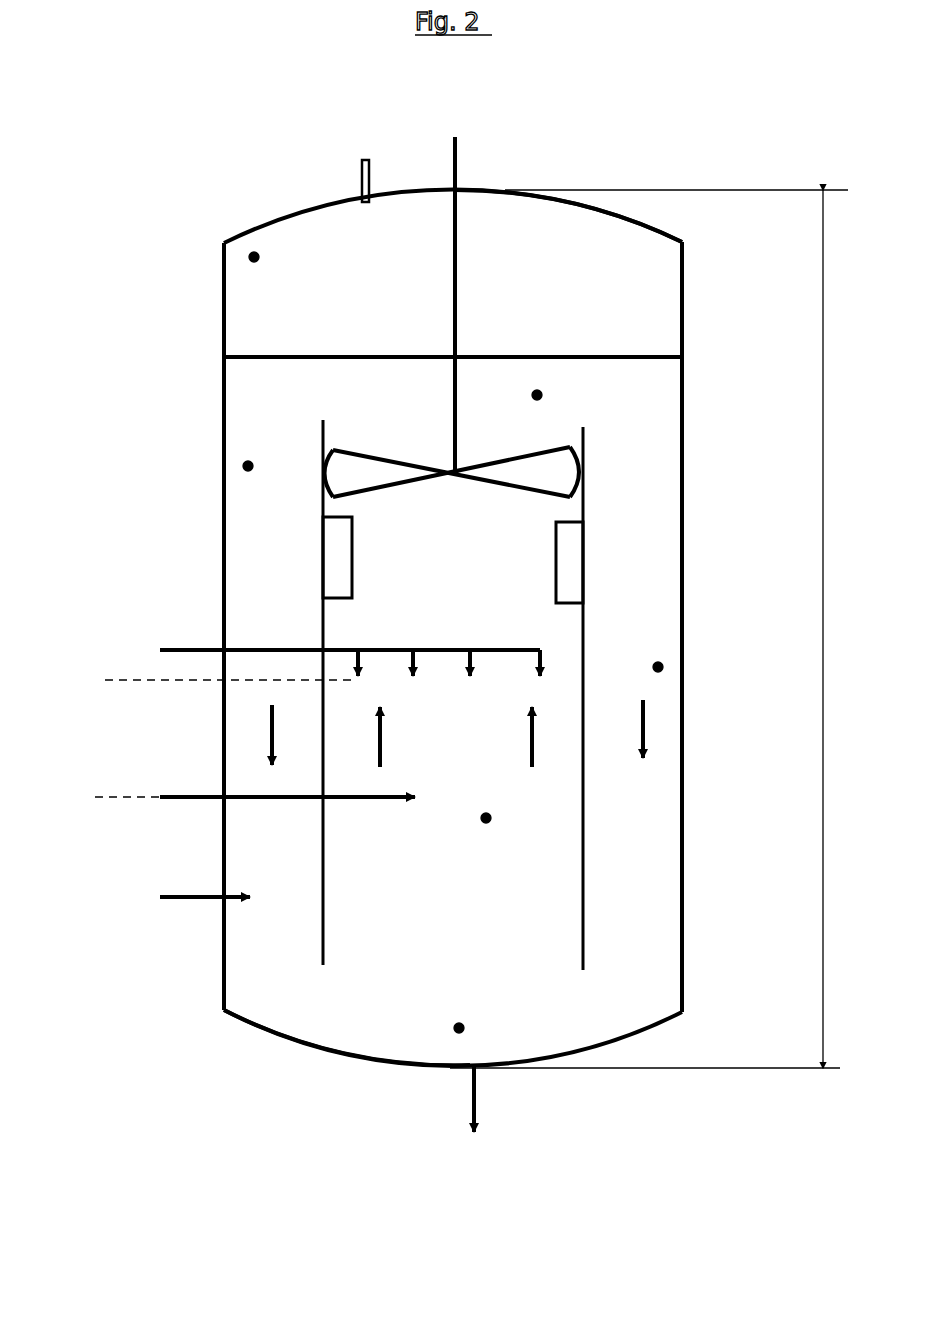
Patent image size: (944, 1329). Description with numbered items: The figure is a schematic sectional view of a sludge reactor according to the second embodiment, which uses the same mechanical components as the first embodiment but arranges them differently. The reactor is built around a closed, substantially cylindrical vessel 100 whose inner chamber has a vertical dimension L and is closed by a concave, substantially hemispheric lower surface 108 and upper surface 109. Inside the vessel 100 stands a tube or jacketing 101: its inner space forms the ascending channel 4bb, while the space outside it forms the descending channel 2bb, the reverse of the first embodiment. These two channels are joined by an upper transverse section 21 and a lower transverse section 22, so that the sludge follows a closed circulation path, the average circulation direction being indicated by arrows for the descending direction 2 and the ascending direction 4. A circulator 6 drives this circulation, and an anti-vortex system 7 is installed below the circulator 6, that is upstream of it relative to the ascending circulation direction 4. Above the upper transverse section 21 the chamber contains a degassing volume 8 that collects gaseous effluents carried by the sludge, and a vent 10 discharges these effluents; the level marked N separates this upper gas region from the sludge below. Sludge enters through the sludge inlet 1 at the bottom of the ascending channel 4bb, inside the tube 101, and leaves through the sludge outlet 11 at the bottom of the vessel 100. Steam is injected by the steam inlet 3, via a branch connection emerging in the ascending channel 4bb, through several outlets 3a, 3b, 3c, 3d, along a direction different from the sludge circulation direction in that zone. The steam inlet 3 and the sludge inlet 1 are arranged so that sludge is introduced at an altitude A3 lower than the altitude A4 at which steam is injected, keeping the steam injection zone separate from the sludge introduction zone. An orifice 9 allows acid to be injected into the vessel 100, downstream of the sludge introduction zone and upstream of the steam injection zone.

The vessel 100 is at (682, 518).
The liquid level N is at (487, 352).
The vent 10 is at (360, 170).
The degassing volume 8 is at (254, 252).
The upper surface 109 is at (598, 216).
The lower surface 108 is at (280, 1030).
The upper transverse section 21 is at (540, 395).
The descending channel 2bb is at (245, 466).
The tube 101 is at (323, 895).
The circulator 6 is at (383, 498).
The anti-vortex system 7 is at (330, 547).
The steam inlet 3 is at (200, 650).
The distributor outlet 3a is at (358, 652).
The distributor outlet 3b is at (413, 652).
The distributor outlet 3c is at (470, 652).
The distributor outlet 3d is at (546, 658).
The altitude A4 is at (204, 680).
The altitude A3 is at (105, 798).
The sludge inlet 1 is at (408, 805).
The orifice 9 is at (197, 896).
The descending direction 2 is at (270, 745).
The ascending direction 4 is at (384, 740).
The ascending channel 4bb is at (486, 822).
The lower transverse section 22 is at (459, 1024).
The sludge outlet 11 is at (478, 1095).
The vertical dimension L is at (649, 629).